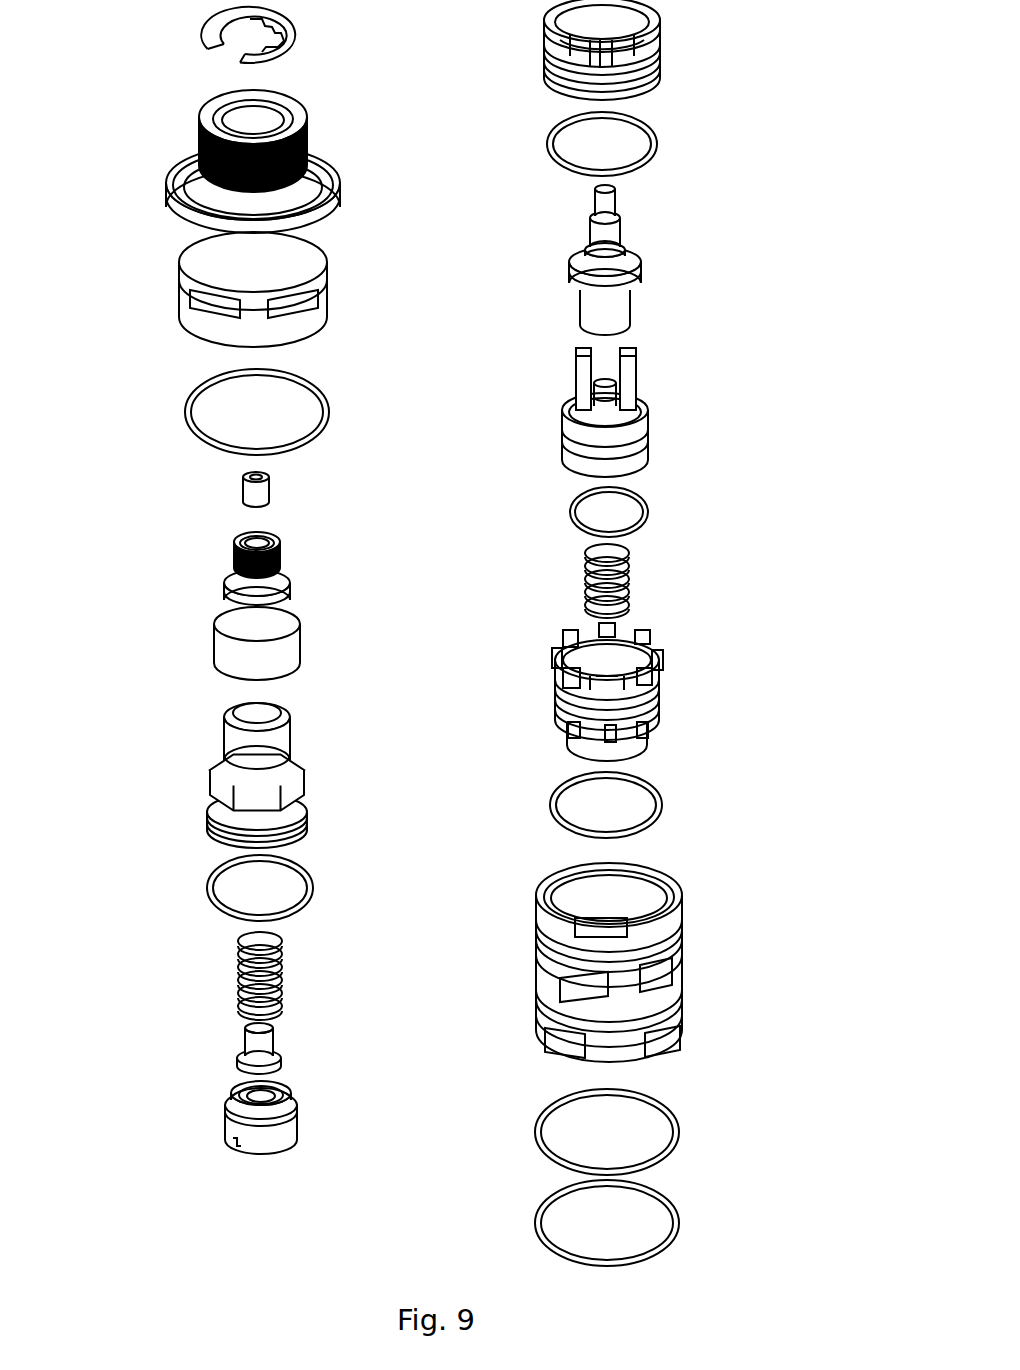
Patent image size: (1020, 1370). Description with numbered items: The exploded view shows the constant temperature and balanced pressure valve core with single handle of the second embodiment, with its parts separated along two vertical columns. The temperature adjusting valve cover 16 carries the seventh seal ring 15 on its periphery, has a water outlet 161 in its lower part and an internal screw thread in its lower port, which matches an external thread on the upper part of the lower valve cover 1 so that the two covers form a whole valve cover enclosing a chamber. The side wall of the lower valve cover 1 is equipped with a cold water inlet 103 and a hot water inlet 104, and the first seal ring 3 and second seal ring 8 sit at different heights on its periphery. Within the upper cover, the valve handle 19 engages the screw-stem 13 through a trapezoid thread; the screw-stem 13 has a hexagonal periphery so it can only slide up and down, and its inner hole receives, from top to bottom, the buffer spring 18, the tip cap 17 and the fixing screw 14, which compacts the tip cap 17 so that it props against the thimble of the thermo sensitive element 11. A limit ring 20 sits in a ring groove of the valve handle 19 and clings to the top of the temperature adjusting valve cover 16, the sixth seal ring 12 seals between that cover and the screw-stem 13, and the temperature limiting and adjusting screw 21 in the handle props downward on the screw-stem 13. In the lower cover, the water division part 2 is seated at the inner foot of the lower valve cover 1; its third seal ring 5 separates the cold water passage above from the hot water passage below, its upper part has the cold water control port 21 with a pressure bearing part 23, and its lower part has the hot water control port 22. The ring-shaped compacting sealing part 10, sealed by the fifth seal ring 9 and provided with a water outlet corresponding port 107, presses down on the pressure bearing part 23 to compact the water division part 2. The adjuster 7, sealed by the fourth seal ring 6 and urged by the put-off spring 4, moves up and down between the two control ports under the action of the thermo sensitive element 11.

The limit ring 20 is at (205, 27).
The temperature adjusting valve cover 16 is at (178, 230).
The water outlet 161 is at (202, 302).
The seventh seal ring 15 is at (183, 417).
The temperature limiting and adjusting screw 21 is at (240, 492).
The valve handle 19 is at (212, 638).
The screw-stem 13 is at (208, 767).
The sixth seal ring 12 is at (205, 880).
The buffer spring 18 is at (233, 982).
The tip cap 17 is at (240, 1042).
The fixing screw 14 is at (222, 1113).
The compacting sealing part 10 is at (657, 78).
The water outlet corresponding port 107 is at (657, 52).
The fifth seal ring 9 is at (661, 138).
The thermo sensitive element 11 is at (643, 283).
The adjuster 7 is at (652, 425).
The fourth seal ring 6 is at (652, 505).
The put-off spring 4 is at (635, 573).
The pressure bearing part 23 is at (644, 633).
The water division part 2 is at (640, 684).
The hot water control port 22 is at (652, 735).
The third seal ring 5 is at (666, 805).
The lower valve cover 1 is at (675, 970).
The cold water inlet 103 is at (680, 970).
The hot water inlet 104 is at (660, 1037).
The first seal ring 3 is at (683, 1133).
The second seal ring 8 is at (668, 1203).